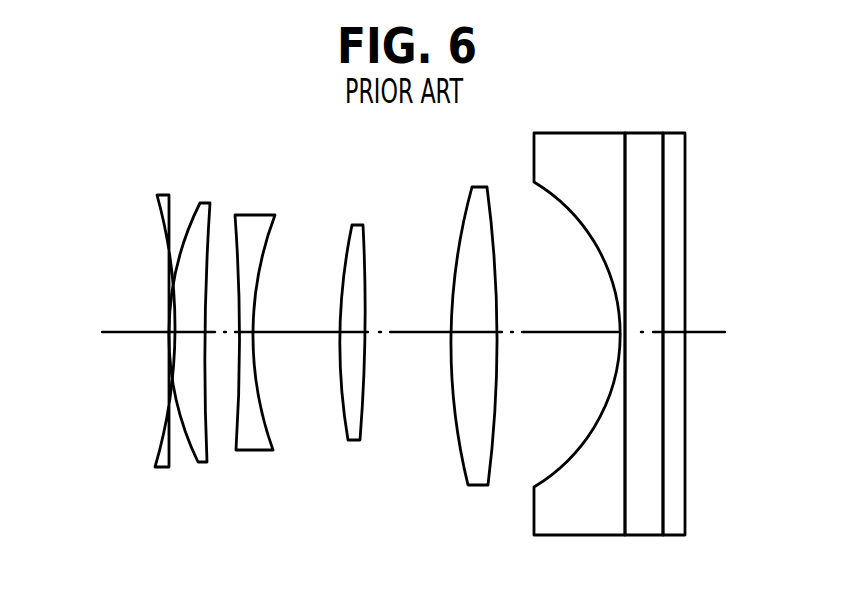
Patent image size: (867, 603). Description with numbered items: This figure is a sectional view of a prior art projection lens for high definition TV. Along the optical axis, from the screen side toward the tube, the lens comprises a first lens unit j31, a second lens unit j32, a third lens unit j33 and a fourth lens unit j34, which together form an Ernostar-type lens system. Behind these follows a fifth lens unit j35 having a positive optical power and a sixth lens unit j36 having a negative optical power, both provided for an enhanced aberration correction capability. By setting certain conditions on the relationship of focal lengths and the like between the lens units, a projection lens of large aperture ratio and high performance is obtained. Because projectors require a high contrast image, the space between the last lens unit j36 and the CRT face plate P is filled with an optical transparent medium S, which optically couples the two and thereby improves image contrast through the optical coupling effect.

The first lens unit j31 is at (158, 456).
The second lens unit j32 is at (200, 442).
The third lens unit j33 is at (252, 440).
The fourth lens unit j34 is at (353, 425).
The fifth lens unit j35 is at (472, 452).
The sixth lens unit j36 is at (557, 523).
The optical transparent medium S is at (640, 523).
The CRT face plate P is at (675, 523).